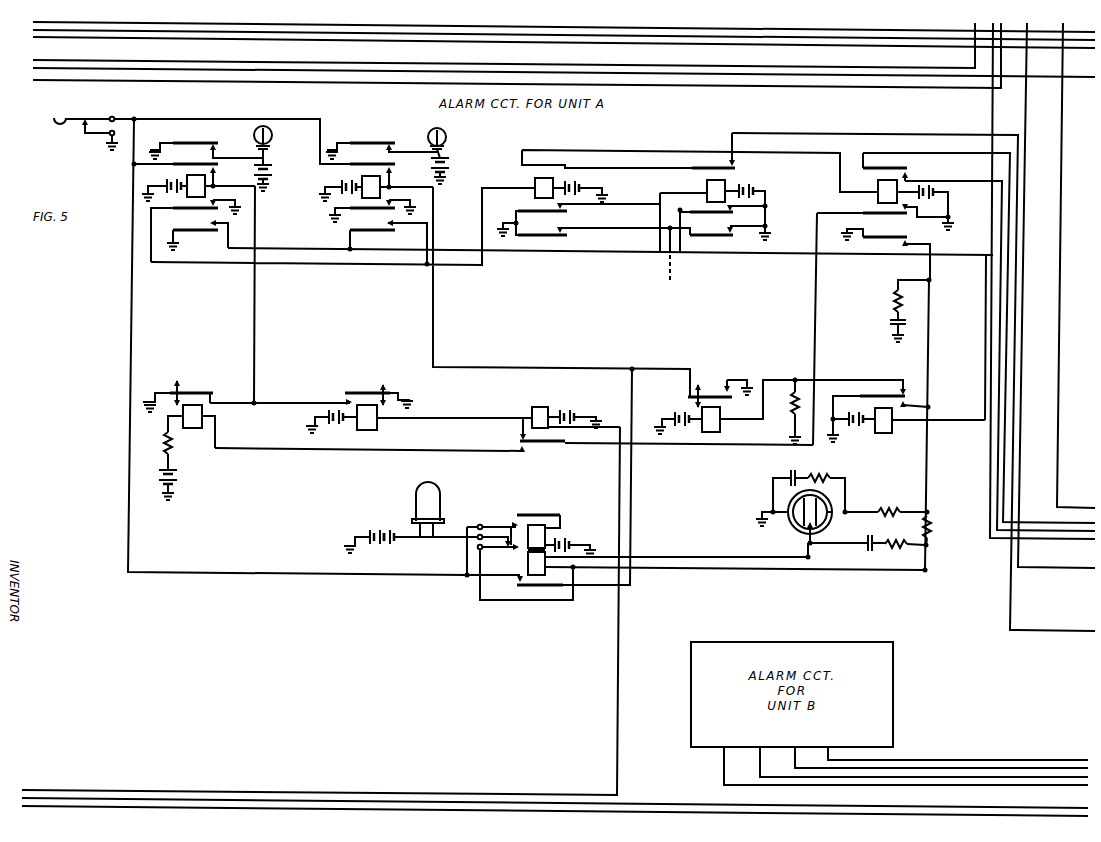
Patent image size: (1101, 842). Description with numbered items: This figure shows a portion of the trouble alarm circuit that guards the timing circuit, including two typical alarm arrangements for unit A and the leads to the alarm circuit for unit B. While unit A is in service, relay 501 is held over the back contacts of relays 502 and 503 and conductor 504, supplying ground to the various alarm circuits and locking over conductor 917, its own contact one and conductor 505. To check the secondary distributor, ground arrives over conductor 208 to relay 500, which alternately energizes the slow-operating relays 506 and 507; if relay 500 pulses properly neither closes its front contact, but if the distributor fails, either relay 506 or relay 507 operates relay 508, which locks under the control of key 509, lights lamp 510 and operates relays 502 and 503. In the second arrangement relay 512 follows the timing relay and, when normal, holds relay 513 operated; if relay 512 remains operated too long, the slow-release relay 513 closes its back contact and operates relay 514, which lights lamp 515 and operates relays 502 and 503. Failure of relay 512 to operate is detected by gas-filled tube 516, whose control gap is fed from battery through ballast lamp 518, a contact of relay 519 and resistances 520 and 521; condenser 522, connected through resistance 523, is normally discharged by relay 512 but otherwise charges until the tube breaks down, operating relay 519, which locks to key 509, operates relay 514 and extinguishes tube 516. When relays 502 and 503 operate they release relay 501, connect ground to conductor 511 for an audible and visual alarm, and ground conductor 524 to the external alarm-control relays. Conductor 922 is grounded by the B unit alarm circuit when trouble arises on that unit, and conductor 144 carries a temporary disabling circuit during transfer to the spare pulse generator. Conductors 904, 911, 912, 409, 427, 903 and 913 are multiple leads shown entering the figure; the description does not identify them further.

The conductor 904 is at (243, 25).
The conductor 911 is at (300, 40).
The conductor 912 is at (185, 69).
The conductor 409 is at (208, 83).
The conductor 427 is at (297, 63).
The key 509 is at (80, 124).
The relay 508 is at (190, 176).
The lamp 510 is at (270, 142).
The relay 514 is at (370, 176).
The lamp 515 is at (447, 134).
The relay 502 is at (535, 180).
The relay 503 is at (707, 186).
The relay 501 is at (892, 180).
The conductor 504 is at (977, 134).
The conductor 505 is at (977, 155).
The conductor 917 is at (978, 181).
The conductor 511 is at (673, 266).
The conductor 524 is at (937, 258).
The resistance 523 is at (894, 301).
The condenser 522 is at (890, 322).
The relay 507 is at (196, 405).
The relay 506 is at (367, 405).
The relay 500 is at (534, 407).
The relay 513 is at (709, 433).
The relay 512 is at (878, 433).
The ballast lamp 518 is at (438, 492).
The relay 519 is at (540, 525).
The gas-filled tube 516 is at (800, 527).
The resistance 521 is at (880, 512).
The resistance 520 is at (930, 523).
The conductor 903 is at (1057, 470).
The conductor 144 is at (1036, 568).
The conductor 208 is at (62, 778).
The conductor 913 is at (102, 778).
The conductor 922 is at (1028, 785).